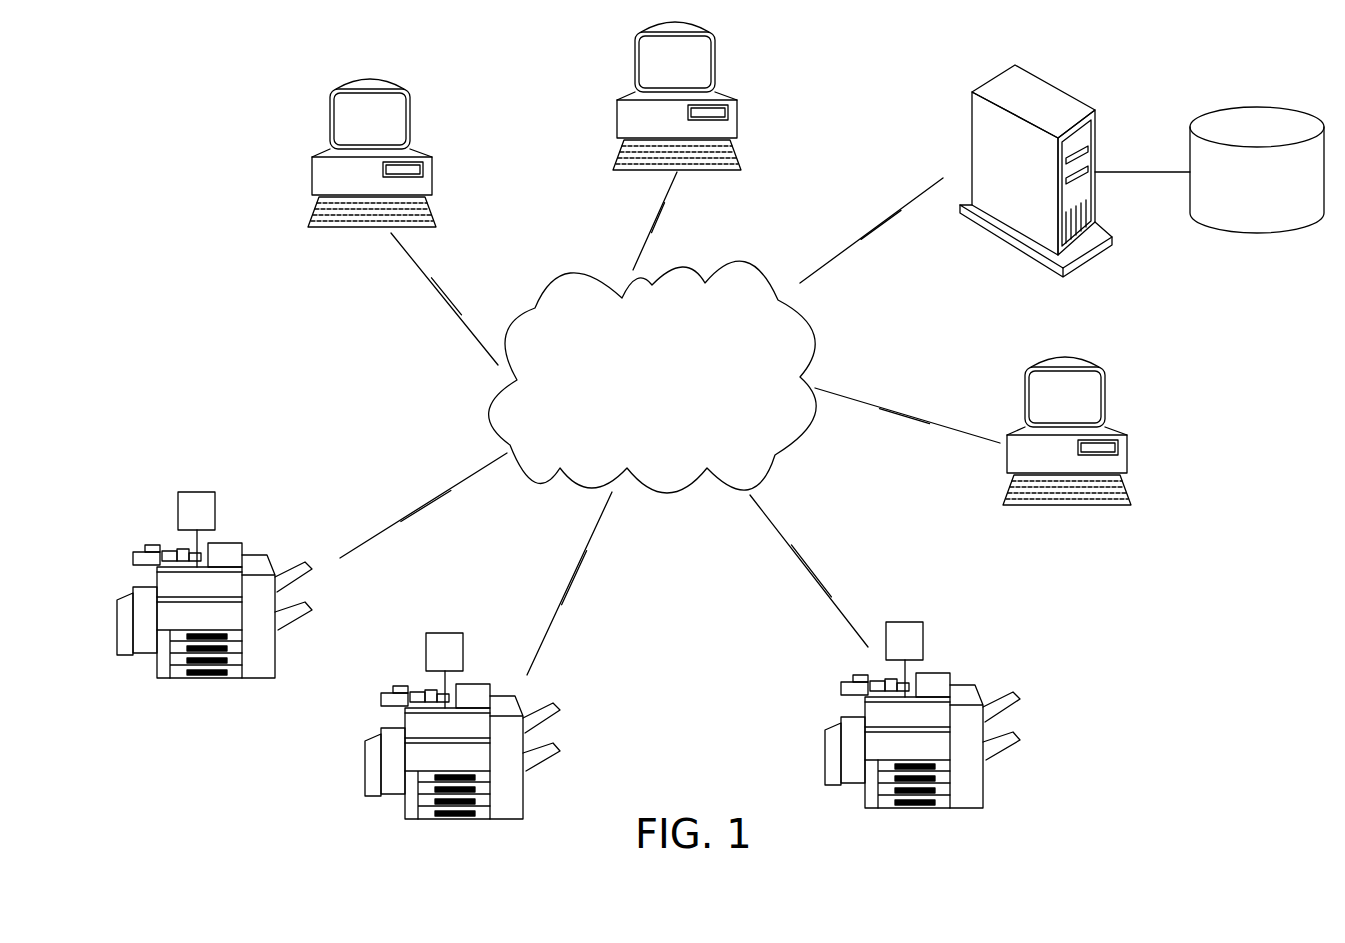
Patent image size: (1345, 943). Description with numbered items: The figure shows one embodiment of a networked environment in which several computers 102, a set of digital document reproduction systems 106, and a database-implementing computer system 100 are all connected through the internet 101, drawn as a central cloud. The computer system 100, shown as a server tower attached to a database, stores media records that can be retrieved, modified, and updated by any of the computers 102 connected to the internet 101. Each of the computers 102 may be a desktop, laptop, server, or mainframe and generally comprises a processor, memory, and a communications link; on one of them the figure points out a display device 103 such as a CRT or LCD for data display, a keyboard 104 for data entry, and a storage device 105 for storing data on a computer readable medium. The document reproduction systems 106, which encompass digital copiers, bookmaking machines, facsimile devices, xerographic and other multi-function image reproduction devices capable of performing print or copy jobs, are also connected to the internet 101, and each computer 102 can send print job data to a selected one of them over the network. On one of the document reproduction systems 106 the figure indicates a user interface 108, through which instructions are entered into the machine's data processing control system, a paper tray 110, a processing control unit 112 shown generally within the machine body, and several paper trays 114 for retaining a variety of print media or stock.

The computer system 100 is at (1095, 92).
The internet 101 is at (818, 337).
The computers 102 is at (432, 125).
The display device 103 is at (1055, 355).
The keyboard 104 is at (1105, 479).
The storage device 105 is at (1137, 430).
The digital document reproduction systems 106 is at (258, 533).
The user interface 108 is at (899, 620).
The paper tray 110 is at (1039, 708).
The processing control unit 112 is at (859, 752).
The paper trays 114 is at (932, 821).